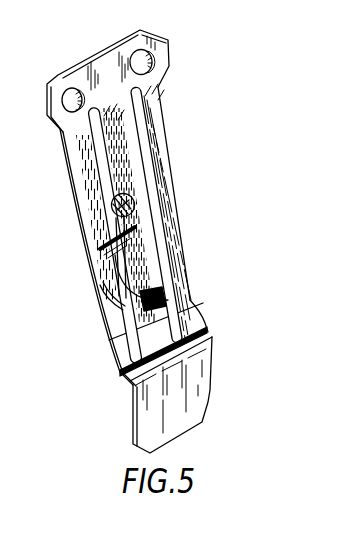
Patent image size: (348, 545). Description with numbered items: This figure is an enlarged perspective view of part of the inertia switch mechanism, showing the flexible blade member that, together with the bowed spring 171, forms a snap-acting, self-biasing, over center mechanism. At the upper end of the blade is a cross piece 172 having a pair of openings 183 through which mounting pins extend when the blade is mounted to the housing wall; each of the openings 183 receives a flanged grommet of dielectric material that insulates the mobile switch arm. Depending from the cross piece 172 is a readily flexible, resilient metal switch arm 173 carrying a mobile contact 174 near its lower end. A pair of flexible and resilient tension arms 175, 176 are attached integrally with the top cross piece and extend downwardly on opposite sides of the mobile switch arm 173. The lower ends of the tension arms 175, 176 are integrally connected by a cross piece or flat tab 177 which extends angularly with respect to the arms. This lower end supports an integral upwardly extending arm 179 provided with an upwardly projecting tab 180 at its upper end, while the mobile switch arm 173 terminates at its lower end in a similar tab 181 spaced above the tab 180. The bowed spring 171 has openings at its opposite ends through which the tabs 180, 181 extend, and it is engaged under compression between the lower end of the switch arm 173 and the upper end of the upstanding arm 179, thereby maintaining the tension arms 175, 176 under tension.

The bowed spring 171 is at (134, 264).
The cross piece 172 is at (104, 56).
The switch arm 173 is at (116, 133).
The mobile contact 174 is at (134, 210).
The tension arm 175 is at (108, 328).
The tension arm 176 is at (184, 267).
The flat tab 177 is at (197, 395).
The upwardly extending arm 179 is at (174, 326).
The tab 180 is at (148, 290).
The tab 181 is at (127, 242).
The openings 183 is at (68, 98).